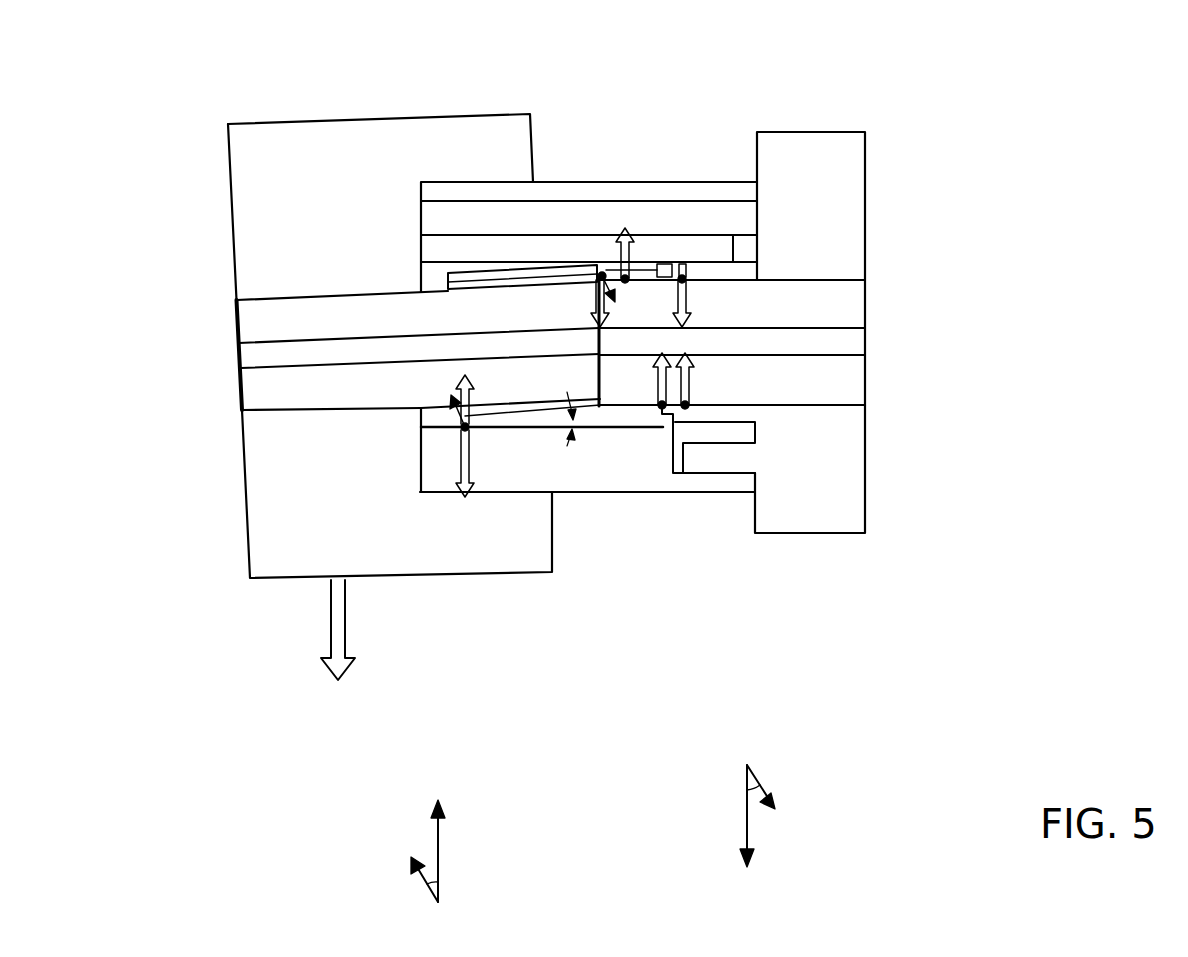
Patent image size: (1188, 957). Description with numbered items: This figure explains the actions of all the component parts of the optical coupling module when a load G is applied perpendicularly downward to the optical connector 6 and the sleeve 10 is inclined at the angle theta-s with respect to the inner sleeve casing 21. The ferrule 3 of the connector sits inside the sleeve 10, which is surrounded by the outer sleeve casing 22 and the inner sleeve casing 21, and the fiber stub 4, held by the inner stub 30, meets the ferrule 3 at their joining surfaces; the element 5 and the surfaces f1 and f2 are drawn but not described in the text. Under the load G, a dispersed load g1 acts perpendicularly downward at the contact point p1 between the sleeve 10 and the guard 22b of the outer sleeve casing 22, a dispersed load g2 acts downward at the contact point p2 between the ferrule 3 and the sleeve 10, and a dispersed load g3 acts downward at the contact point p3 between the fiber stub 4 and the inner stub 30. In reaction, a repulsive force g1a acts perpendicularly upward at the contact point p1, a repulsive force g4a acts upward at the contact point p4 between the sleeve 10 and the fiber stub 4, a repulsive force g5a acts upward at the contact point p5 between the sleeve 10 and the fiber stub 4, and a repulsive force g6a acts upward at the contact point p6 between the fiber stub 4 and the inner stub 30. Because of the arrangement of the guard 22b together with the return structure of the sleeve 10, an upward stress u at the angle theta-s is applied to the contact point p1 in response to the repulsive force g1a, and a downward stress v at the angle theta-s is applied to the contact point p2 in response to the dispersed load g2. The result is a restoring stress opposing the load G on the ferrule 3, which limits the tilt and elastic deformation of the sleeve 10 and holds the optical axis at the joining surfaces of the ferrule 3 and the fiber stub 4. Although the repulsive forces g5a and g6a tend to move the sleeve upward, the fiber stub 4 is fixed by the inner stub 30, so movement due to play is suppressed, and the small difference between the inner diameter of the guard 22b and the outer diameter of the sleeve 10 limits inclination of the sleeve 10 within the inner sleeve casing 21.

The ferrule 3 is at (293, 426).
The fiber stub 4 is at (866, 298).
The upper right block 5 is at (866, 173).
The optical connector 6 is at (232, 196).
The sleeve 10 is at (440, 225).
The inner sleeve casing 21 is at (733, 458).
The outer sleeve casing 22 is at (448, 272).
The guard 22b is at (493, 493).
The inner stub 30 is at (733, 262).
The left end face f1 is at (240, 356).
The plate surface f2 is at (866, 338).
The contact point p1 is at (468, 430).
The contact point p2 is at (602, 276).
The contact point p3 is at (682, 279).
The contact point p4 is at (625, 279).
The contact point p5 is at (662, 406).
The contact point p6 is at (685, 406).
The dispersed load g1 is at (449, 463).
The repulsive force g1a is at (476, 637).
The dispersed load g2 is at (658, 591).
The dispersed load g3 is at (699, 303).
The repulsive force g4a is at (623, 240).
The repulsive force g5a is at (641, 378).
The repulsive force g6a is at (710, 378).
The upward stress u is at (425, 642).
The downward stress v is at (698, 548).
The load G is at (338, 651).